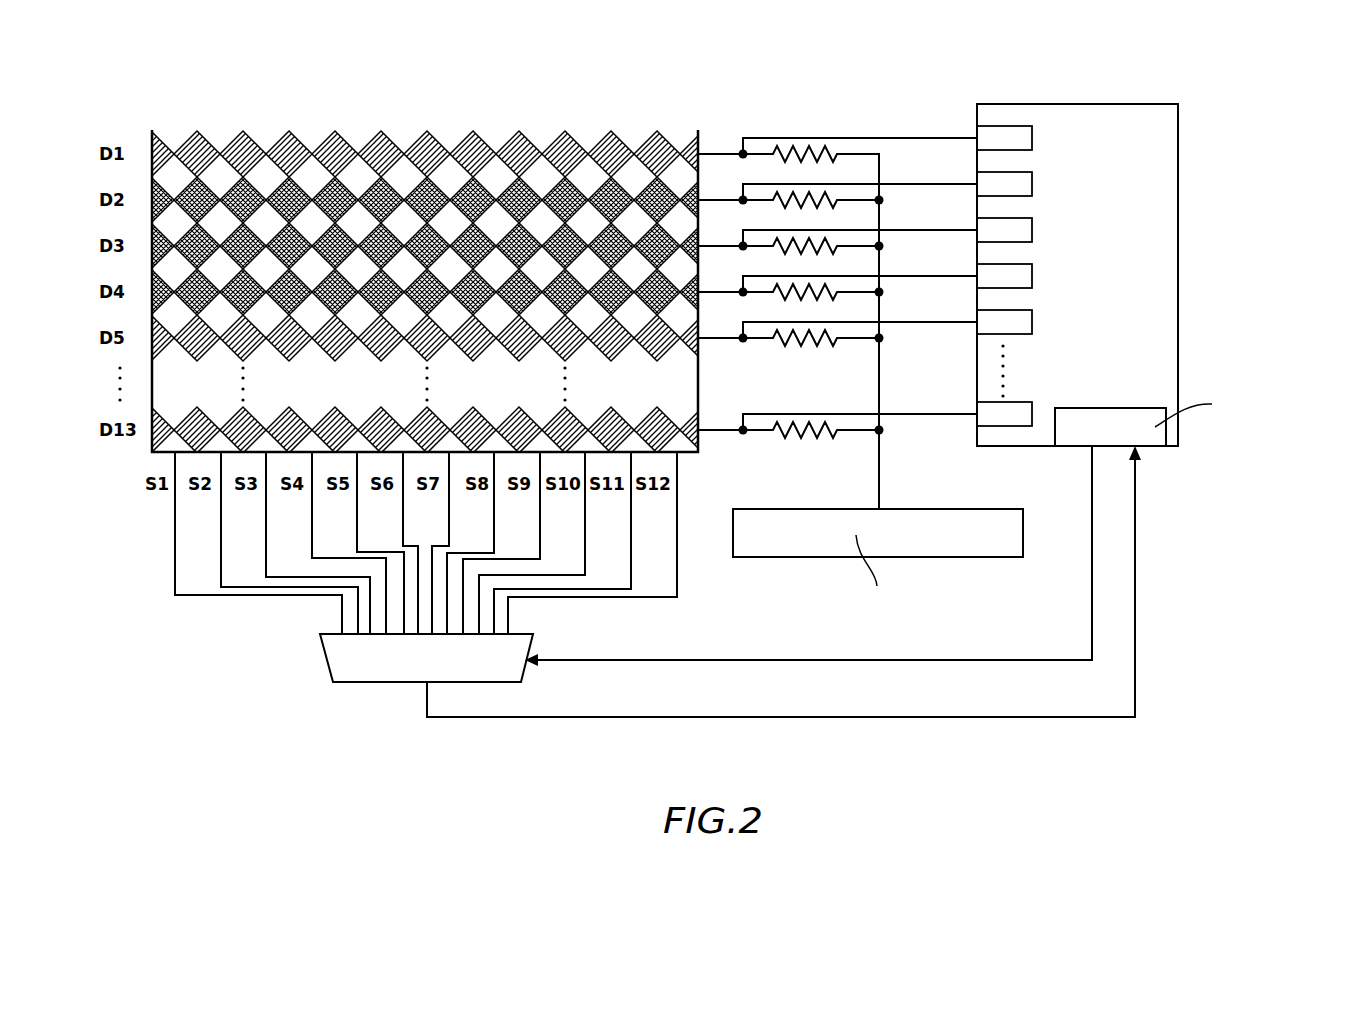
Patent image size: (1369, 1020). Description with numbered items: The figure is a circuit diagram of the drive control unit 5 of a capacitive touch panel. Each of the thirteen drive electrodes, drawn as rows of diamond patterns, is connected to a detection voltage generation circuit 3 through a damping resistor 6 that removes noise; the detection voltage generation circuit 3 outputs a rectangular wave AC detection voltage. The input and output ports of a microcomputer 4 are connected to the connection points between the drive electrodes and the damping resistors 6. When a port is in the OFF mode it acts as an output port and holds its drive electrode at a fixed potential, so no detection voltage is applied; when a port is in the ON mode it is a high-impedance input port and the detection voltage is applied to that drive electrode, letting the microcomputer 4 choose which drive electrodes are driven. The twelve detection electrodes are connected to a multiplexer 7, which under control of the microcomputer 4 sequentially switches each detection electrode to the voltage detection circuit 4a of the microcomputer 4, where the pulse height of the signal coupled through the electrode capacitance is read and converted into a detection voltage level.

The detection voltage generation circuit 3 is at (970, 546).
The microcomputer 4 is at (1086, 341).
The voltage detection circuit 4a is at (1157, 441).
The drive control unit 5 is at (837, 275).
The damping resistor 6 is at (791, 153).
The multiplexer 7 is at (325, 665).